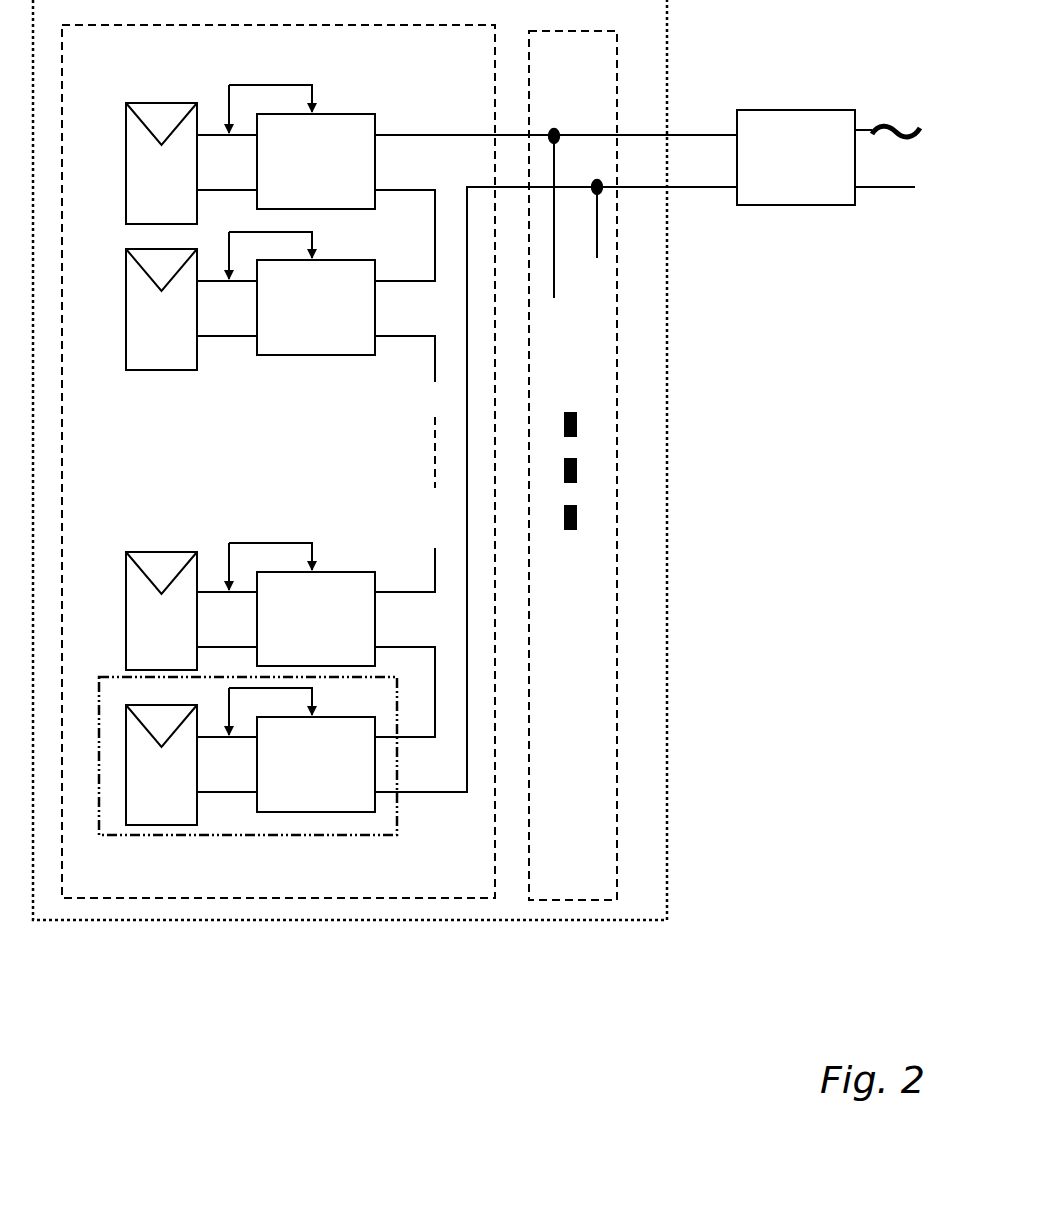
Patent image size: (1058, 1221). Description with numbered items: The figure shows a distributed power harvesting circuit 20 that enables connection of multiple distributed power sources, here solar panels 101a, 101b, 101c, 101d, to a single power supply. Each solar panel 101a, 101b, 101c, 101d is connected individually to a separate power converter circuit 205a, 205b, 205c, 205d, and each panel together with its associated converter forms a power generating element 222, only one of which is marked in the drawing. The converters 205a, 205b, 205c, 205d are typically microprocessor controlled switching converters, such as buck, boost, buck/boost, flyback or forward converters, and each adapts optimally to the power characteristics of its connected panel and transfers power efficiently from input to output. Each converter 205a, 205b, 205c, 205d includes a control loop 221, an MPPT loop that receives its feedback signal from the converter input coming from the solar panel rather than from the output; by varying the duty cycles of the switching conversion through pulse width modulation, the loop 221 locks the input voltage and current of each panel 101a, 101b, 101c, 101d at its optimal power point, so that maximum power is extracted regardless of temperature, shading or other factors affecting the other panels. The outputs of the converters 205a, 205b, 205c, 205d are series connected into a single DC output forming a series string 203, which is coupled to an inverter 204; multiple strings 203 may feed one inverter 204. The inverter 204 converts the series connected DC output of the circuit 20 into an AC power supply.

The distributed power harvesting circuit 20 is at (669, 374).
The solar panel 101a is at (197, 794).
The solar panel 101b is at (197, 643).
The solar panel 101c is at (197, 339).
The solar panel 101d is at (197, 192).
The power converter circuit 205a is at (348, 776).
The power converter circuit 205b is at (348, 631).
The power converter circuit 205c is at (348, 319).
The power converter circuit 205d is at (348, 173).
The control loop 221 is at (315, 85).
The power generating element 222 is at (397, 805).
The series string 203 is at (365, 898).
The inverter 204 is at (820, 171).